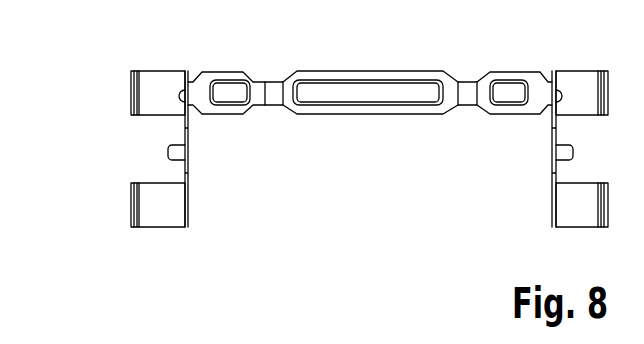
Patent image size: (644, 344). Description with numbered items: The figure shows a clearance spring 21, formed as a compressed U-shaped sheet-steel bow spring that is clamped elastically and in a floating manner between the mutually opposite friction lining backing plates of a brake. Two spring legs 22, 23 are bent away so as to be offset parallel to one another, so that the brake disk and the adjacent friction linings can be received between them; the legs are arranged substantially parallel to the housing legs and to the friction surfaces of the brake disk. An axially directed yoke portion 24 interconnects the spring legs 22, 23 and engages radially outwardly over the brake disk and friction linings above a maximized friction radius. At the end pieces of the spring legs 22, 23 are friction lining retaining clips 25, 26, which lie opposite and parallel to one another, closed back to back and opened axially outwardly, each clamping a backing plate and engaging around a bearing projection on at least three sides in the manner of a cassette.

The clearance spring 21 is at (123, 66).
The spring leg 22 is at (520, 75).
The spring leg 23 is at (233, 77).
The yoke portion 24 is at (373, 93).
The friction lining retaining clip 25 is at (554, 158).
The friction lining retaining clip 26 is at (188, 166).